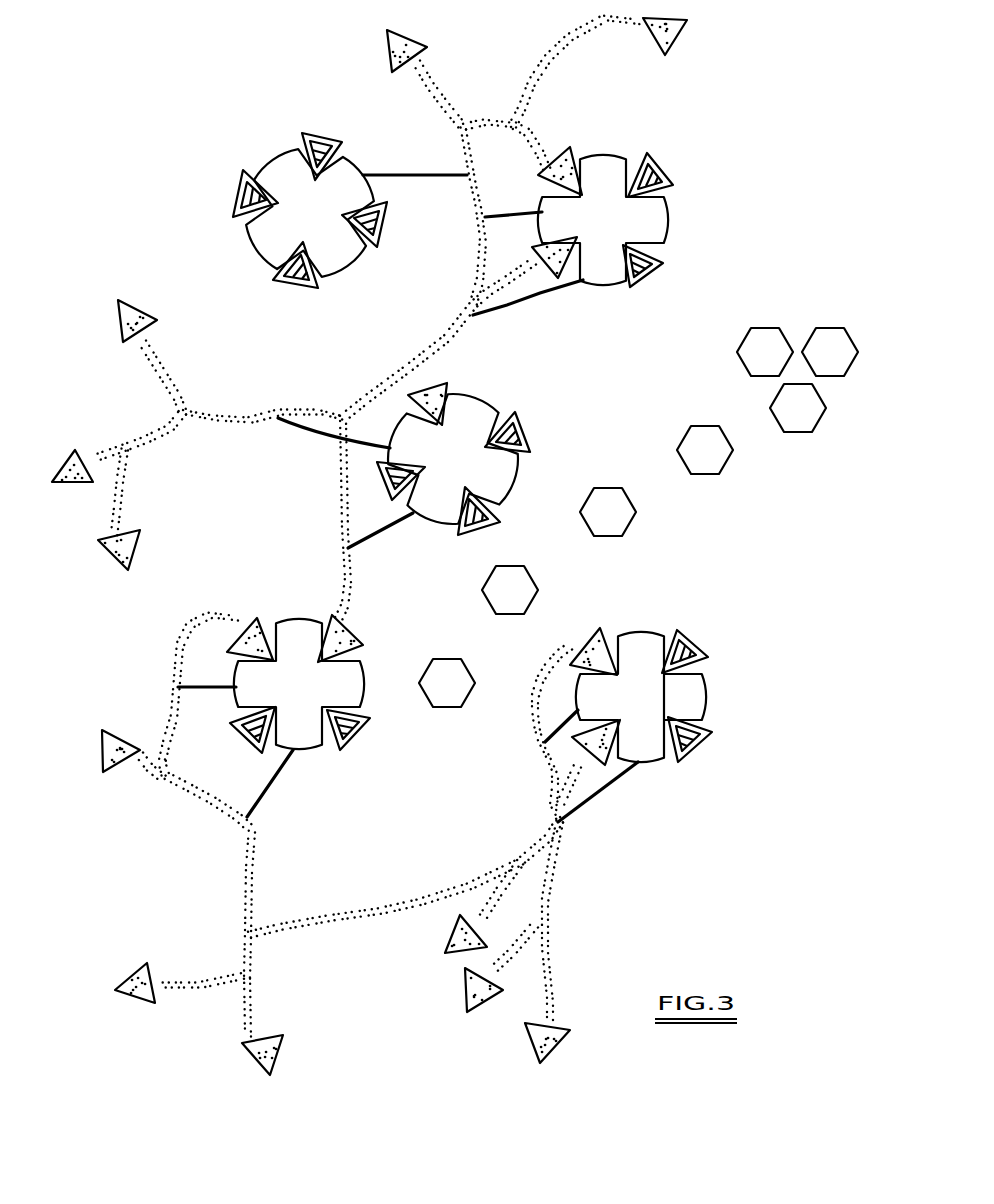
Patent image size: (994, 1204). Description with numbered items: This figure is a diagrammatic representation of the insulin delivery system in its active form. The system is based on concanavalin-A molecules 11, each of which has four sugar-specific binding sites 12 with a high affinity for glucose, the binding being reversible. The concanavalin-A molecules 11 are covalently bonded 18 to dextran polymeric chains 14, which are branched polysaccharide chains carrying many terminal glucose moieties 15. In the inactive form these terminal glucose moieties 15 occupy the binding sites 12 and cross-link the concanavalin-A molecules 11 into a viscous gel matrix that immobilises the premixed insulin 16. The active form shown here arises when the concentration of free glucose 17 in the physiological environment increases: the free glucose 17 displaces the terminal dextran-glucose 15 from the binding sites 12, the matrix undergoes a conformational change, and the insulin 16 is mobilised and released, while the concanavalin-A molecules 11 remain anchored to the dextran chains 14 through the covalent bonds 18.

The concanavalin-A molecule 11 is at (695, 698).
The binding site 12 is at (680, 717).
The dextran polymeric chain 14 is at (238, 417).
The terminal glucose moiety 15 is at (595, 760).
The insulin 16 is at (713, 472).
The free glucose 17 is at (687, 743).
The covalent bond 18 is at (400, 174).